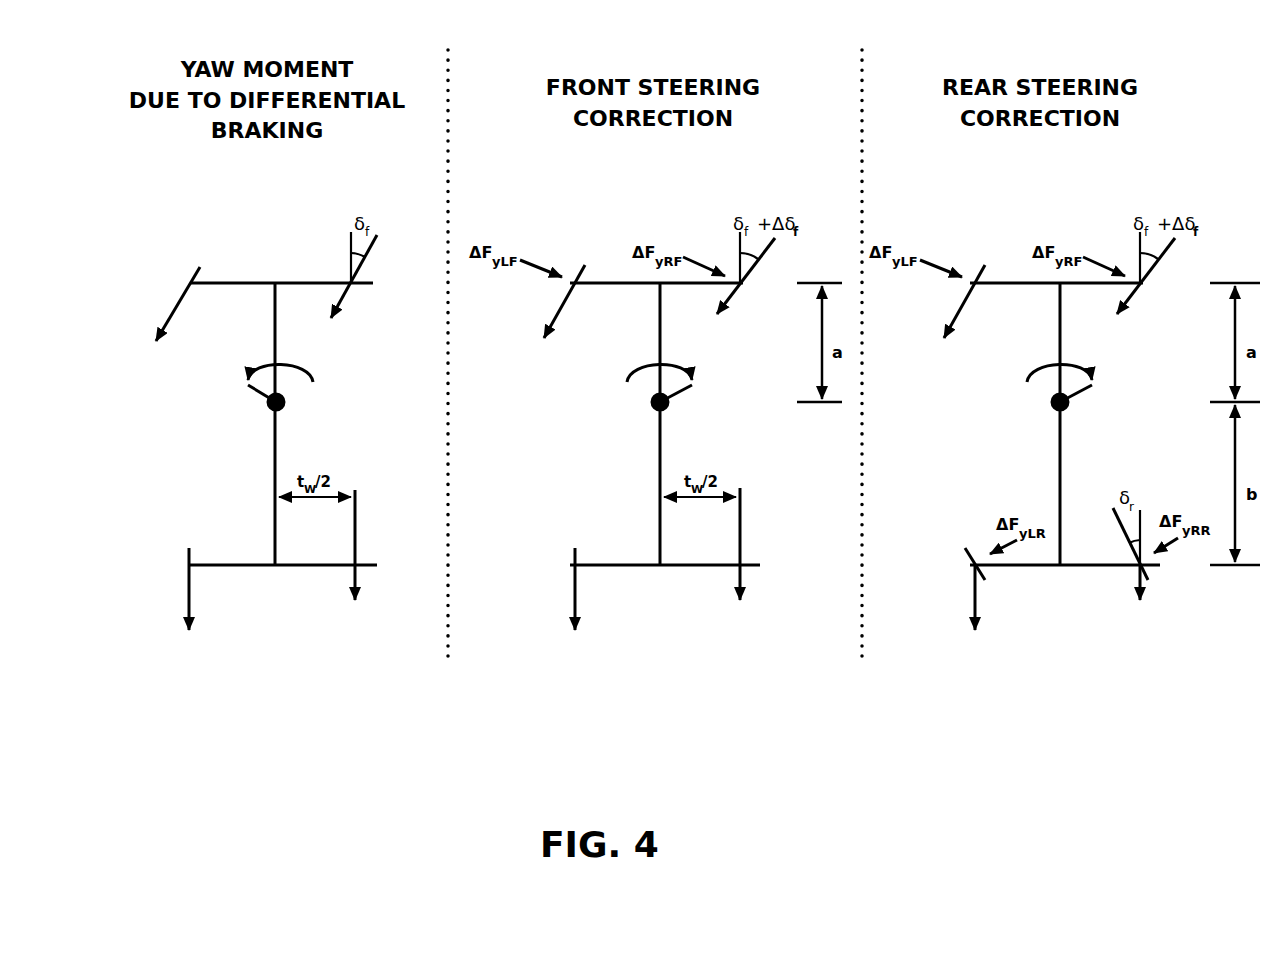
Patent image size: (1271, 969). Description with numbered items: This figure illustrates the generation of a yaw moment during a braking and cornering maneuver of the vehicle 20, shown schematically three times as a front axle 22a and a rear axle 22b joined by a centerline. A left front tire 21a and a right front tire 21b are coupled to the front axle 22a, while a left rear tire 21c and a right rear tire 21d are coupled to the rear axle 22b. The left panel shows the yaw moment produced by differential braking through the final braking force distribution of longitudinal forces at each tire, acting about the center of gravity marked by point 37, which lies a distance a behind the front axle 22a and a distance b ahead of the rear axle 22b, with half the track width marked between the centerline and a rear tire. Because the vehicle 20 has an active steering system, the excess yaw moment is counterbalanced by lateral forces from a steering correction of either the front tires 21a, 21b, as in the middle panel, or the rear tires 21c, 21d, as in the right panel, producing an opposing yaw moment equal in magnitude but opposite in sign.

The vehicle 20 is at (140, 408).
The left front tire 21a is at (187, 283).
The right front tire 21b is at (366, 283).
The left rear tire 21c is at (188, 567).
The right rear tire 21d is at (360, 566).
The front axle 22a is at (230, 283).
The rear axle 22b is at (238, 566).
The center of gravity 37 is at (286, 404).